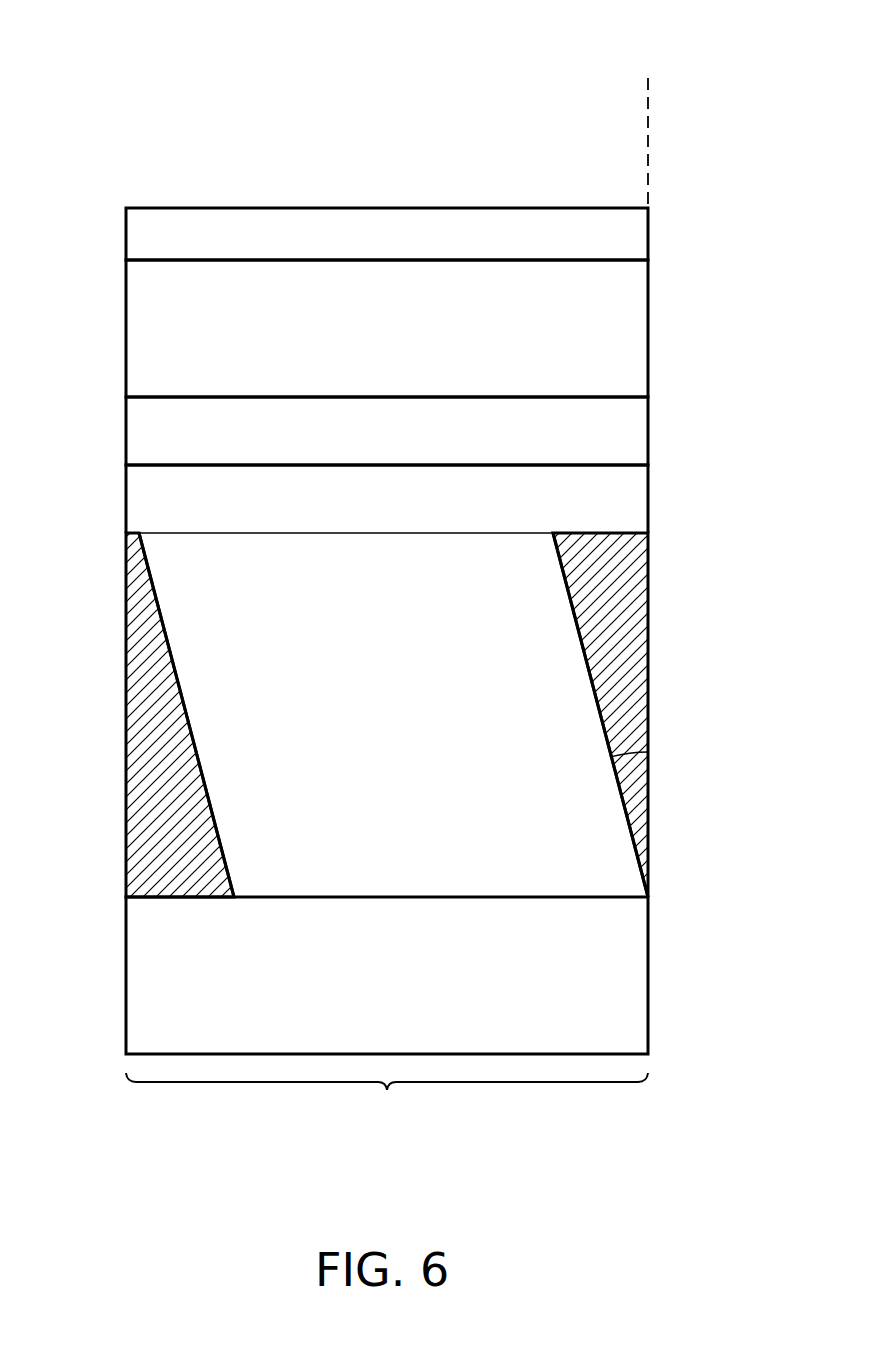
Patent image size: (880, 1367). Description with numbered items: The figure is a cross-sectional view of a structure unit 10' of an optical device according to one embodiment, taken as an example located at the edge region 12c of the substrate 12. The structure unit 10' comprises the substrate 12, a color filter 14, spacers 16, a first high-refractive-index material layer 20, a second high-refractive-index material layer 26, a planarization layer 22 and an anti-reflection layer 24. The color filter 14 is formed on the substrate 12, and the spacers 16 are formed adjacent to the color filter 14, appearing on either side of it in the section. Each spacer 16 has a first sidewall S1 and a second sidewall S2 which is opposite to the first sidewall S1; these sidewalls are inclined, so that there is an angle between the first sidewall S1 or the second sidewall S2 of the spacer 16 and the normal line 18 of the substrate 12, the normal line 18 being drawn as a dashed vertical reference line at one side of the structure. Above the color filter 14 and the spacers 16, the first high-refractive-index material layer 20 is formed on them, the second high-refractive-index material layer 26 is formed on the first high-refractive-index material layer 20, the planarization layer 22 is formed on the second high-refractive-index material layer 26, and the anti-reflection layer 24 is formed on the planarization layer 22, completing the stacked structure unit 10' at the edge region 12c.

The structure unit 10' is at (106, 26).
The substrate 12 is at (633, 975).
The edge region 12c is at (387, 1101).
The color filter 14 is at (503, 838).
The spacers 16 is at (137, 820).
The normal line 18 is at (650, 143).
The first high-refractive-index material layer 20 is at (140, 498).
The planarization layer 22 is at (140, 326).
The anti-reflection layer 24 is at (140, 232).
The second high-refractive-index material layer 26 is at (140, 430).
The first sidewall S1 is at (184, 714).
The second sidewall S2 is at (582, 627).